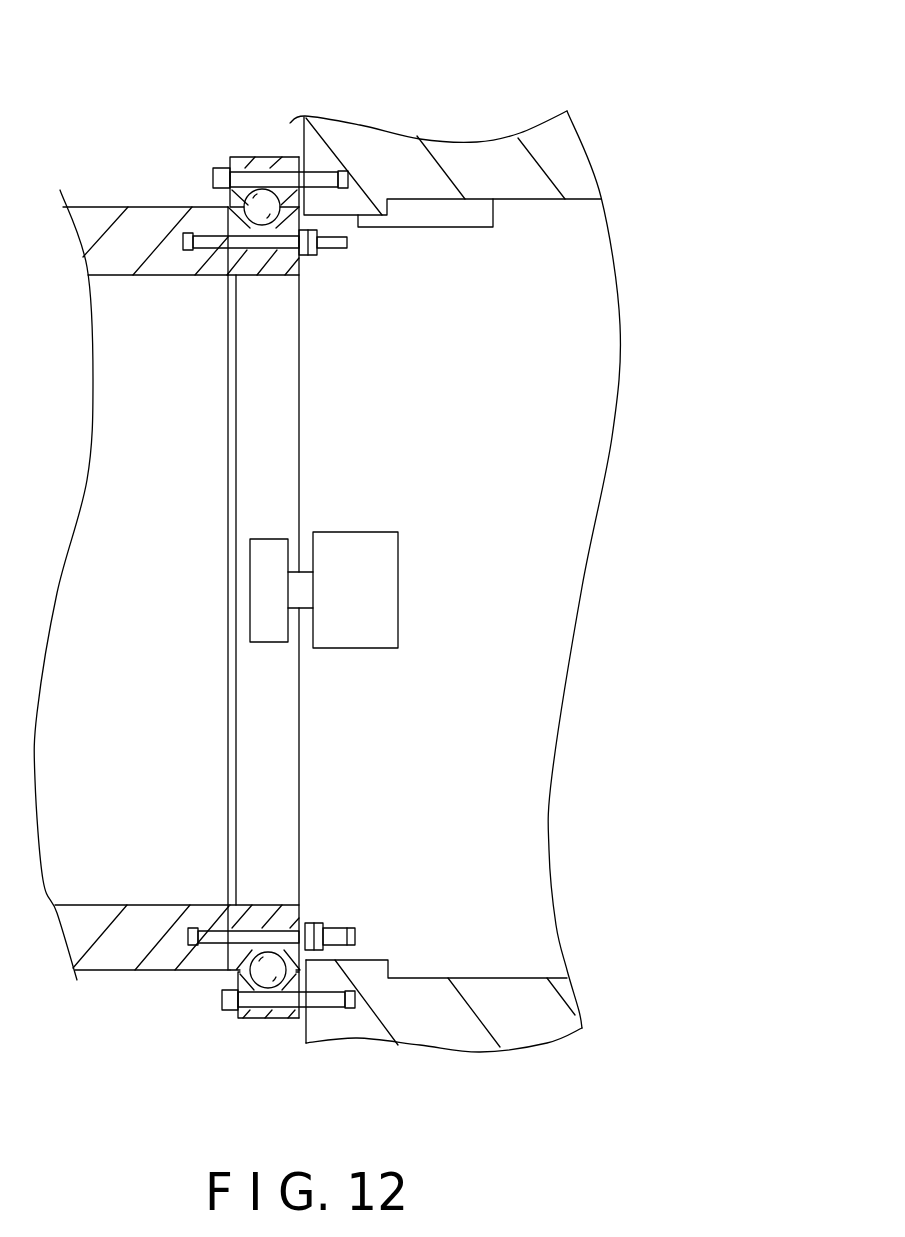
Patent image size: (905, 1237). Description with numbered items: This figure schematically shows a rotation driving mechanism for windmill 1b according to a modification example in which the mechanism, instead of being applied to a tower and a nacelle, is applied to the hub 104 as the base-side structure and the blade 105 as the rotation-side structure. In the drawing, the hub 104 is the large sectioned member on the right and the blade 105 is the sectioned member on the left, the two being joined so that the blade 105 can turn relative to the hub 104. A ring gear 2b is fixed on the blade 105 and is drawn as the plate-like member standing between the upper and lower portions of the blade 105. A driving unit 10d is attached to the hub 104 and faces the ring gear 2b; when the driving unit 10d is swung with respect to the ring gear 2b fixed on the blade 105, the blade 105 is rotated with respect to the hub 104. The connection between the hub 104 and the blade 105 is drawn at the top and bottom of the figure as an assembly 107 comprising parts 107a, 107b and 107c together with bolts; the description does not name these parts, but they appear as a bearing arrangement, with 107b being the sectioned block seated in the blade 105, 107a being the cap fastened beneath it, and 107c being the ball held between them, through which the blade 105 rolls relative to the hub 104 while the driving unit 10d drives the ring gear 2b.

The hub 104 is at (393, 147).
The blade 105 is at (158, 222).
The rotation driving mechanism for windmill 1b is at (361, 587).
The ring gear 2b is at (275, 728).
The driving unit 10d is at (398, 665).
The bearing assembly 107 is at (293, 1043).
The bearing cap 107a is at (253, 1013).
The bearing block 107b is at (250, 917).
The ball 107c is at (262, 203).